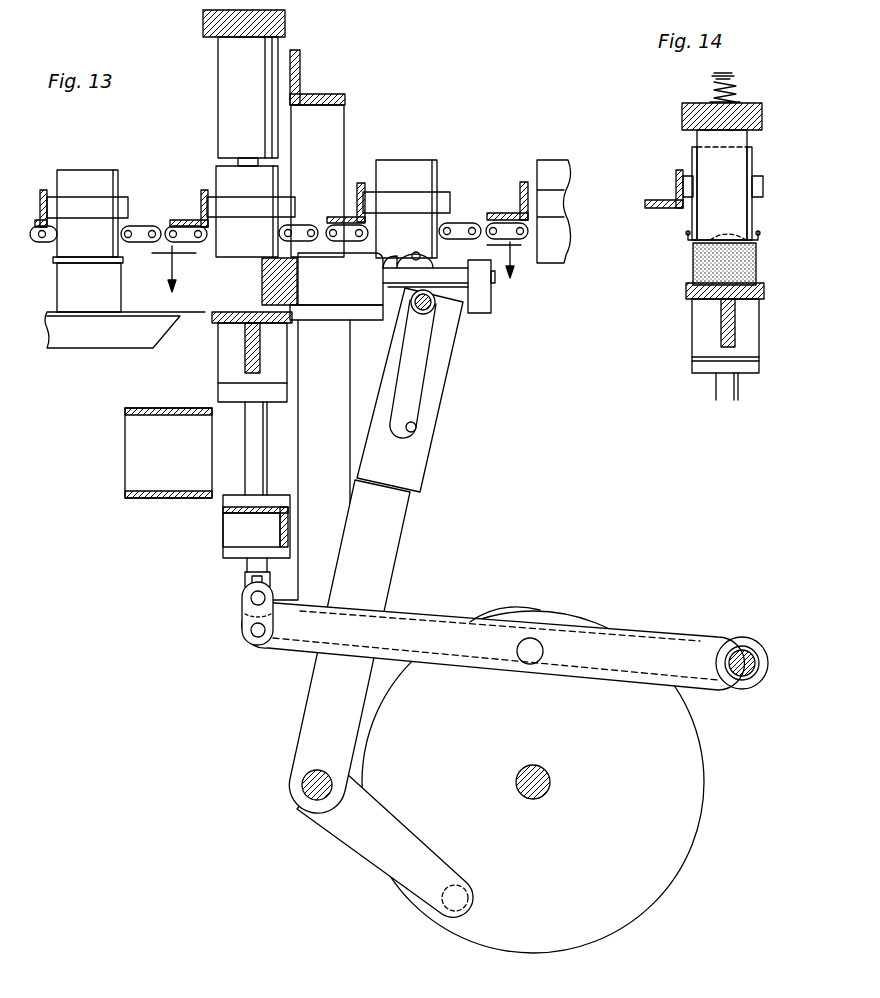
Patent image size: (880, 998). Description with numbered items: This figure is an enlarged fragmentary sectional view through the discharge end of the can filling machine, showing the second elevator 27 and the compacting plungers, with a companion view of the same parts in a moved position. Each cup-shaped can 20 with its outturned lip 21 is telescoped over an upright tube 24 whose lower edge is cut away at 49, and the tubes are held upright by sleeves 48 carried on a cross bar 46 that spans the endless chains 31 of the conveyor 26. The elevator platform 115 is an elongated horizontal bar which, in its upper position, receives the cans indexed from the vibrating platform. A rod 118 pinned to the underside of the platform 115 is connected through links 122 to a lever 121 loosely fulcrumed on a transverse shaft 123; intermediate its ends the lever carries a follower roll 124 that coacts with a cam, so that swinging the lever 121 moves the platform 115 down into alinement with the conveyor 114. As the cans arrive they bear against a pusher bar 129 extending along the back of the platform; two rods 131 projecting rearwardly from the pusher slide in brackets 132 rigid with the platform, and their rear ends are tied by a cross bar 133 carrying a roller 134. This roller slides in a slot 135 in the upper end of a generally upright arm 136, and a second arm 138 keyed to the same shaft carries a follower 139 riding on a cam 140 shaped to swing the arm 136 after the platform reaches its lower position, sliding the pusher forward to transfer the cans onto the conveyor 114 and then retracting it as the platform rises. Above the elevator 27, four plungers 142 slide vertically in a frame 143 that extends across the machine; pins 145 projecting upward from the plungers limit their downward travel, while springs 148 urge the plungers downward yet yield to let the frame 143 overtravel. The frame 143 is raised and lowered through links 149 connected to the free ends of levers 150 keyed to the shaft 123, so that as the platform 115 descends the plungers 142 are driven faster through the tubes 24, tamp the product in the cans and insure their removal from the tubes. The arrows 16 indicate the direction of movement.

In FIG. 13, the frame 143 is at (206, 23).
In FIG. 14, the frame 143 is at (757, 119).
In FIG. 13, the plunger 142 is at (220, 113).
In FIG. 14, the plunger 142 is at (735, 174).
In FIG. 13, the tube 24 is at (118, 175).
In FIG. 13, the sleeve 48 is at (122, 201).
In FIG. 14, the sleeve 48 is at (764, 188).
In FIG. 13, the cross bar 46 is at (201, 212).
In FIG. 14, the cross bar 46 is at (672, 205).
In FIG. 13, the endless chain 31 is at (144, 231).
In FIG. 13, the conveyor 26 is at (458, 221).
In FIG. 13, the direction arrow 16 is at (336, 267).
In FIG. 13, the outturned lip 21 is at (116, 263).
In FIG. 14, the outturned lip 21 is at (760, 236).
In FIG. 13, the can 20 is at (110, 290).
In FIG. 14, the can 20 is at (758, 266).
In FIG. 13, the pusher bar 129 is at (264, 280).
In FIG. 13, the bracket 132 is at (362, 300).
In FIG. 13, the rod 131 is at (447, 278).
In FIG. 13, the cut away portion 49 is at (413, 256).
In FIG. 13, the cross bar 133 is at (492, 305).
In FIG. 13, the elevator platform 115 is at (252, 312).
In FIG. 14, the elevator platform 115 is at (692, 285).
In FIG. 13, the elevator 27 is at (218, 357).
In FIG. 14, the elevator 27 is at (688, 358).
In FIG. 13, the conveyor 114 is at (176, 398).
In FIG. 13, the rod 118 is at (262, 468).
In FIG. 14, the rod 118 is at (720, 396).
In FIG. 13, the link 149 is at (243, 589).
In FIG. 13, the link 122 is at (240, 606).
In FIG. 13, the lever 121 is at (295, 648).
In FIG. 13, the lever 150 is at (408, 616).
In FIG. 13, the follower roll 124 is at (544, 652).
In FIG. 13, the shaft 123 is at (762, 664).
In FIG. 13, the cam 140 is at (700, 753).
In FIG. 13, the second arm 138 is at (420, 853).
In FIG. 13, the follower 139 is at (473, 890).
In FIG. 13, the upright arm 136 is at (405, 528).
In FIG. 13, the slot 135 is at (409, 433).
In FIG. 13, the roller 134 is at (423, 316).
In FIG. 14, the spring 148 is at (735, 77).
In FIG. 14, the pin 145 is at (737, 91).